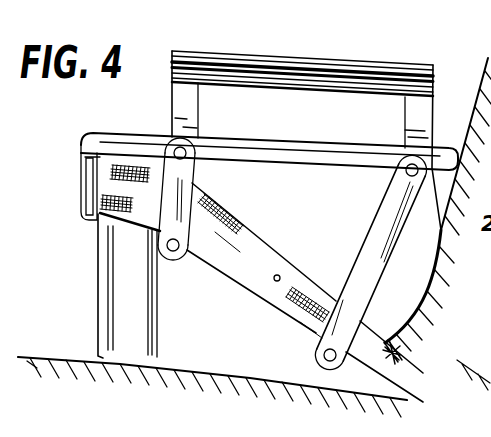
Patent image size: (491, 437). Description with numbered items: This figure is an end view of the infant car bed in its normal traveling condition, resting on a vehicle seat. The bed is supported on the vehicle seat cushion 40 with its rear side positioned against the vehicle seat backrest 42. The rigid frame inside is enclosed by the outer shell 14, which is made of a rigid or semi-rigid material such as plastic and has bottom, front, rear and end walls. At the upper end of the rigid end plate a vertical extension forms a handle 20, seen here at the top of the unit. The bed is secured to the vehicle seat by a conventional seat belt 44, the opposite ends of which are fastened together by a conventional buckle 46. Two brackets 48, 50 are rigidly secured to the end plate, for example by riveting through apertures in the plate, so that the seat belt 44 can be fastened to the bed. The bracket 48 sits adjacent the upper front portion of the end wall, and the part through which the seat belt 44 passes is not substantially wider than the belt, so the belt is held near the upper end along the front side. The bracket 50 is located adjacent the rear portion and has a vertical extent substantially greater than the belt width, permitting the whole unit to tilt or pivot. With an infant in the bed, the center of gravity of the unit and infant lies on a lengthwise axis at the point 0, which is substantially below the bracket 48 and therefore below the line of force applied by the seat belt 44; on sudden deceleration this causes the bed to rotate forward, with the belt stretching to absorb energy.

The handle 20 is at (310, 62).
The vehicle seat backrest 42 is at (486, 64).
The buckle 46 is at (80, 205).
The outer shell 14 is at (97, 289).
The vehicle seat cushion 40 is at (33, 357).
The bracket 48 is at (193, 180).
The seat belt 44 is at (258, 249).
The bracket 50 is at (378, 212).
The axis of the center of gravity 0 is at (274, 279).